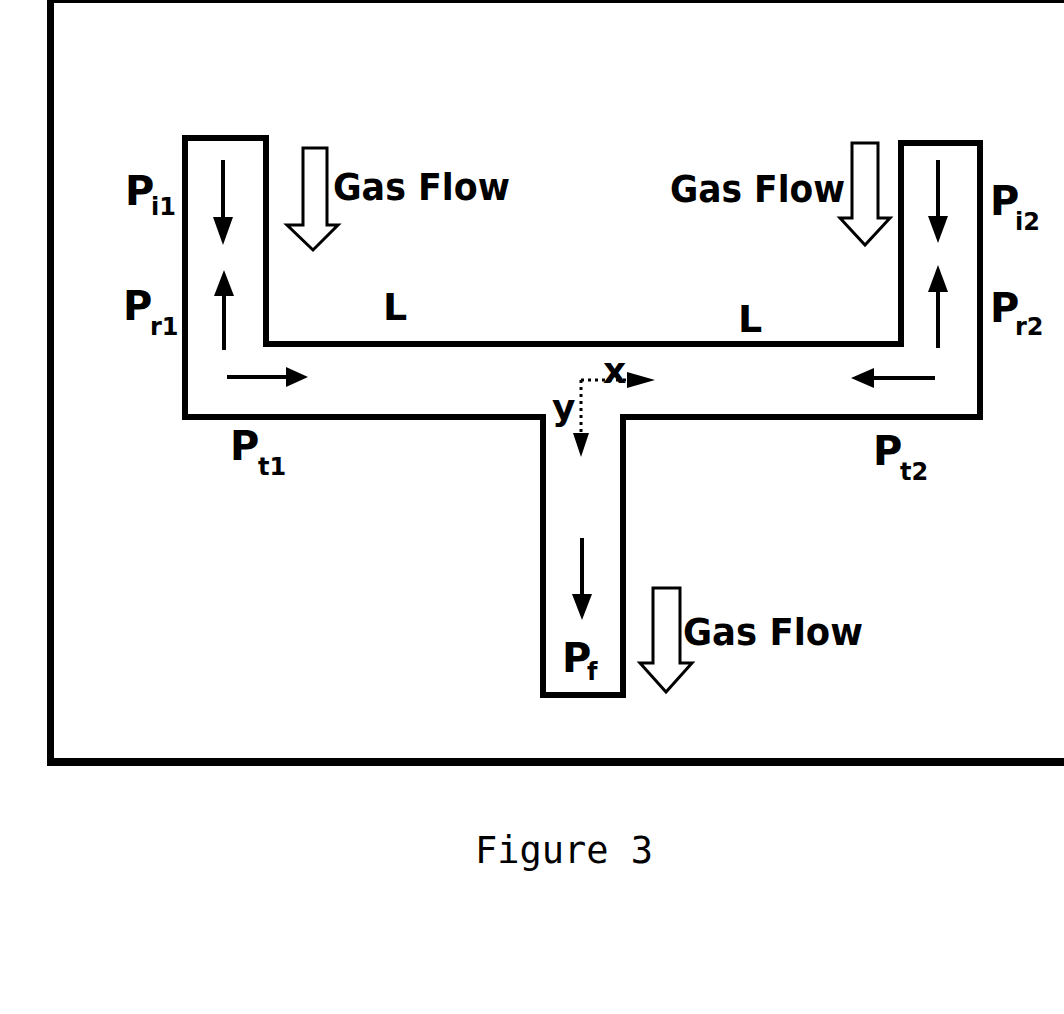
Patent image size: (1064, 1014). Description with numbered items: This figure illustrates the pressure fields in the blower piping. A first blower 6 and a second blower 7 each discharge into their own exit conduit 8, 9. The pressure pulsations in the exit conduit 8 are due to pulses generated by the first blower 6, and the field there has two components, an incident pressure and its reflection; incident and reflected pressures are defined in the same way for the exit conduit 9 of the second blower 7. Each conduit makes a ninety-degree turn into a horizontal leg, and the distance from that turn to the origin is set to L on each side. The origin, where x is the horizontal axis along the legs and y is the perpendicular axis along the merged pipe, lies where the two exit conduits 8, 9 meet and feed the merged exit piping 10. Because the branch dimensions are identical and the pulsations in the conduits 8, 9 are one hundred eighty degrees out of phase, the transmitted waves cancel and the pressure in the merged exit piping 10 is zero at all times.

The first blower 6 is at (232, 196).
The second blower 7 is at (951, 196).
The exit conduit of the first blower 8 is at (366, 382).
The exit conduit of the second blower 9 is at (803, 385).
The merged exit piping 10 is at (558, 554).